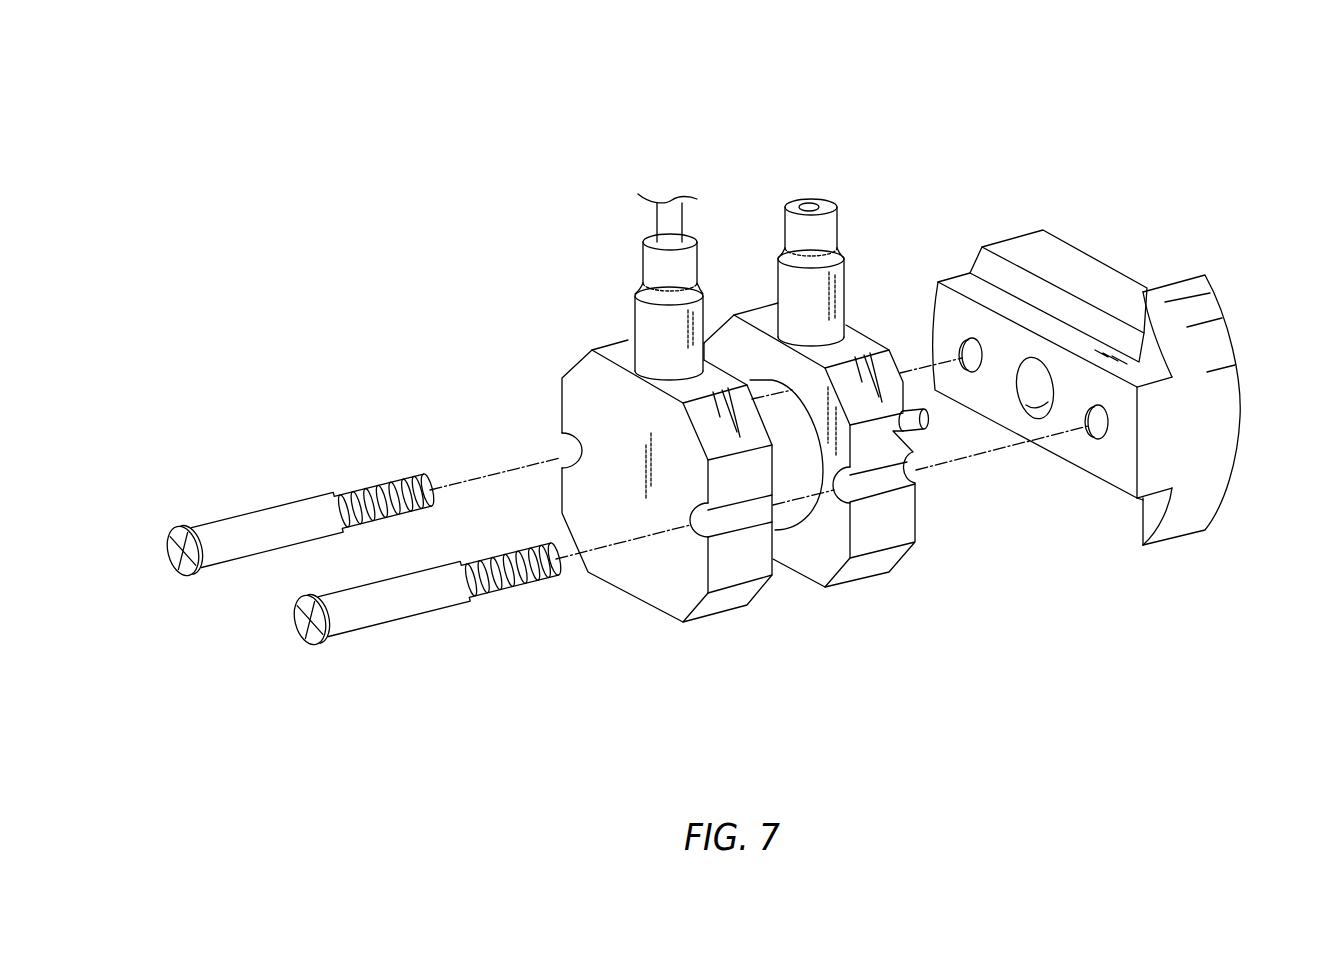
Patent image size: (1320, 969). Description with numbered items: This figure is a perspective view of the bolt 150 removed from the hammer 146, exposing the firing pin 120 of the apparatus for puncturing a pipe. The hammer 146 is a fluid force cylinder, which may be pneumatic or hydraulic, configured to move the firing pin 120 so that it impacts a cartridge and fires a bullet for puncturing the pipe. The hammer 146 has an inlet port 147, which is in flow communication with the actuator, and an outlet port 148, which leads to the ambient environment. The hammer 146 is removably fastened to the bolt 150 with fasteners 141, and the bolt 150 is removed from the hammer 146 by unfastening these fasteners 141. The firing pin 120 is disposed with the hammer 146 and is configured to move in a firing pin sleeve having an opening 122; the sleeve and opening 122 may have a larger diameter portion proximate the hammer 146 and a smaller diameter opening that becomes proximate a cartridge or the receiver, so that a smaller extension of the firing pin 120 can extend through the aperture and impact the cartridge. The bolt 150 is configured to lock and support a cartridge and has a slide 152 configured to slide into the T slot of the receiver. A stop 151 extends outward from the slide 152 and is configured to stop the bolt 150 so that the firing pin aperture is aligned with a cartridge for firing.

The firing pin 120 is at (924, 412).
The opening 122 is at (1020, 333).
The fasteners 141 is at (298, 614).
The hammer 146 is at (773, 395).
The inlet port 147 is at (658, 325).
The outlet port 148 is at (823, 240).
The bolt 150 is at (1150, 303).
The stop 151 is at (1157, 518).
The slide 152 is at (1165, 437).